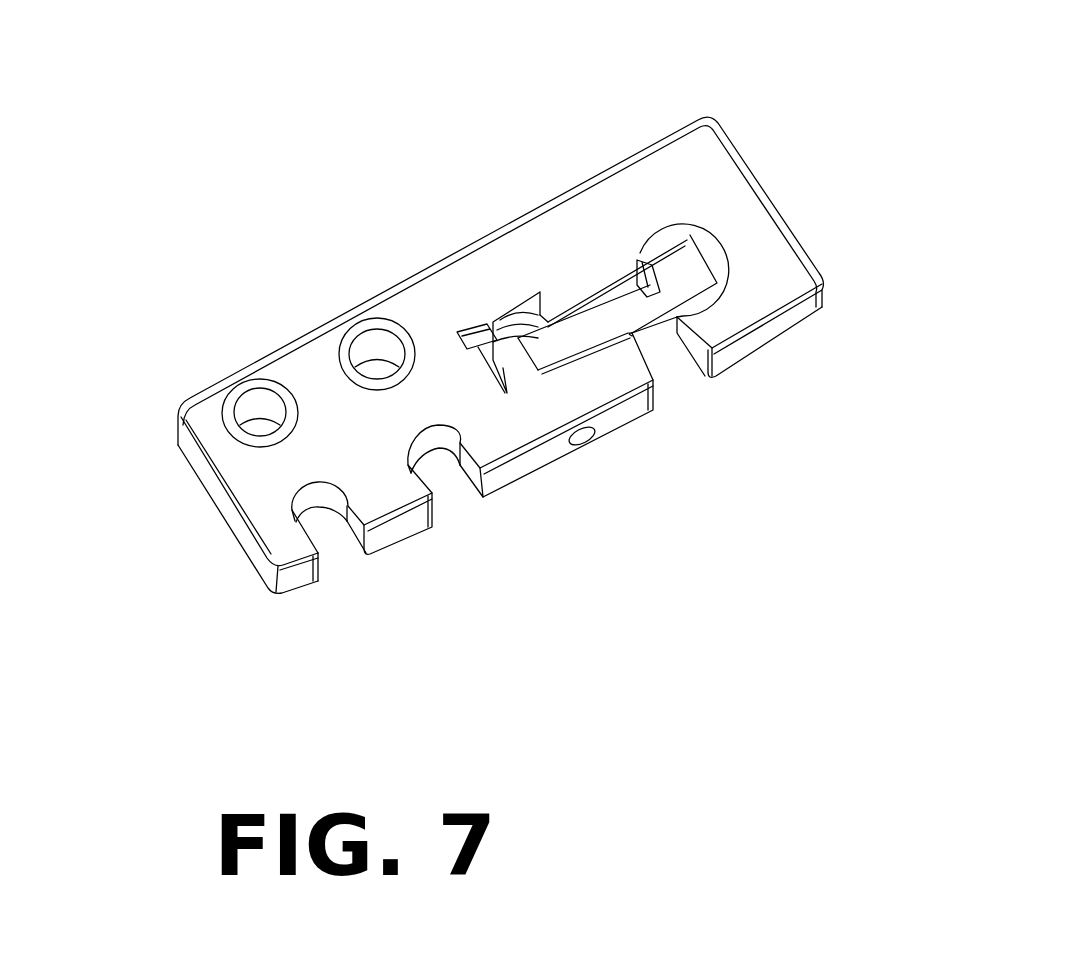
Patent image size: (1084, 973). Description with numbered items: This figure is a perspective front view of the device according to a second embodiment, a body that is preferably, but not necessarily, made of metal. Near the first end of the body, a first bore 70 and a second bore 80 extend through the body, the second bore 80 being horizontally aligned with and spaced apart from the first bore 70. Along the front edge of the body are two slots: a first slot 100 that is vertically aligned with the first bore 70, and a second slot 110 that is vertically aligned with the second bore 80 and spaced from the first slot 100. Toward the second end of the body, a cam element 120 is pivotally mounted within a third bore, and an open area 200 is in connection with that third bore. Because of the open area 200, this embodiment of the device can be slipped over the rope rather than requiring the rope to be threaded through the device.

The first bore 70 is at (378, 360).
The second bore 80 is at (262, 412).
The first slot 100 is at (445, 483).
The second slot 110 is at (328, 537).
The cam element 120 is at (625, 310).
The open area 200 is at (672, 373).